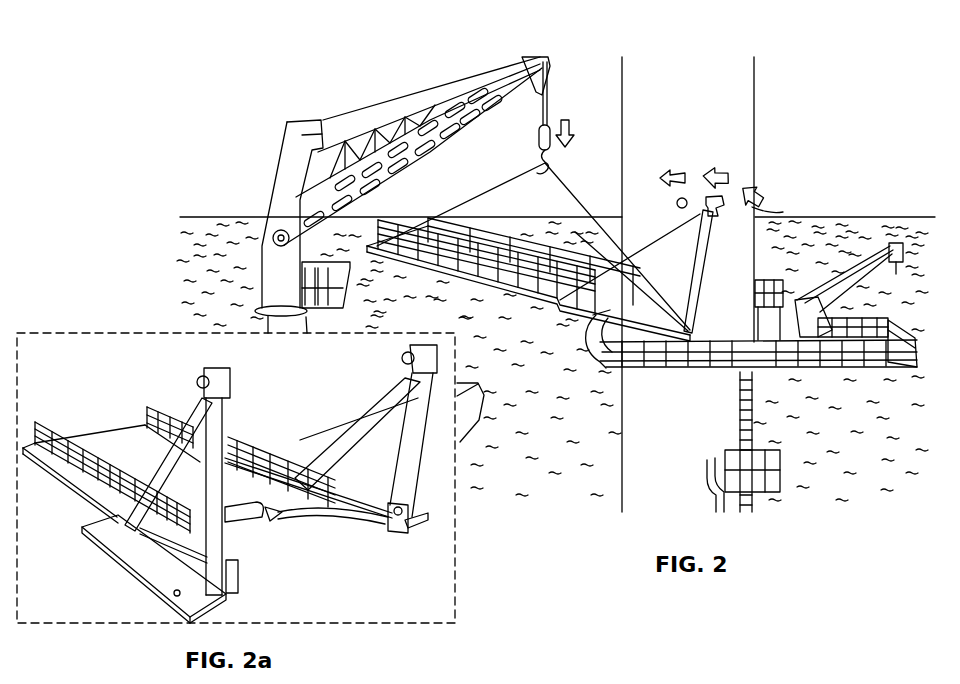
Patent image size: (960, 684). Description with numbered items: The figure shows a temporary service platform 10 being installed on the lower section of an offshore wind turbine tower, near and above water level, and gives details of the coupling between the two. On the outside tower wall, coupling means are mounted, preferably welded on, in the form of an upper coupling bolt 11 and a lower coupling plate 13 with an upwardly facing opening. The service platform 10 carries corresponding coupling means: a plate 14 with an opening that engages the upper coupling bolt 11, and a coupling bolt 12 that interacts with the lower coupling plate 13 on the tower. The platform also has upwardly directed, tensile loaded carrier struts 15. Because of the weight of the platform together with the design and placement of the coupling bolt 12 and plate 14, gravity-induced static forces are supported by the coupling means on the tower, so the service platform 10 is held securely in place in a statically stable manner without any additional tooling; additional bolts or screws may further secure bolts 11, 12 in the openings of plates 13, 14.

In FIG. 2a, the temporary service platform 10 is at (108, 443).
In FIG. 2, the upper coupling bolt 11 is at (677, 203).
In FIG. 2a, the upper coupling bolt 11 is at (197, 382).
In FIG. 2a, the coupling bolt 12 is at (238, 556).
In FIG. 2a, the lower coupling plate 13 is at (245, 590).
In FIG. 2, the plate 14 is at (783, 212).
In FIG. 2a, the plate 14 is at (238, 386).
In FIG. 2a, the carrier strut 15 is at (200, 417).